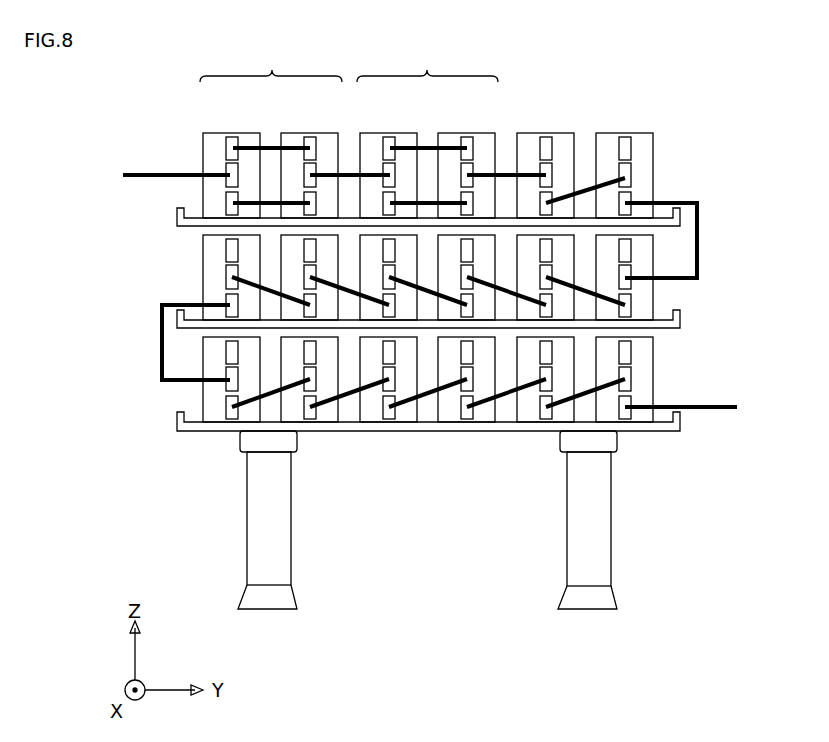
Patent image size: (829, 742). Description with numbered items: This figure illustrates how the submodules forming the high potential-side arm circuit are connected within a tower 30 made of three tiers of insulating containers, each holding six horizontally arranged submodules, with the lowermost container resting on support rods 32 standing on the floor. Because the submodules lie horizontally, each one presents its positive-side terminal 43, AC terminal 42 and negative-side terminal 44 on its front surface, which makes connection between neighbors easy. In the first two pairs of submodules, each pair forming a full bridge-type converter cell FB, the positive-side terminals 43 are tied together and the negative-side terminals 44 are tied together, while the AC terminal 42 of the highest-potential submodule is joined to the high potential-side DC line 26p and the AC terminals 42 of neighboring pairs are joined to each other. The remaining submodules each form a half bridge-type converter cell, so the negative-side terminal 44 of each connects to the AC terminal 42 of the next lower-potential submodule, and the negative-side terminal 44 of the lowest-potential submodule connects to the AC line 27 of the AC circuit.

The tower 30 is at (693, 94).
The high potential-side DC line 26p is at (148, 172).
The AC line 27 is at (722, 412).
The support rod 32 is at (280, 525).
The AC terminal 42 is at (633, 172).
The positive-side terminal 43 is at (632, 150).
The negative-side terminal 44 is at (640, 198).
The functional block FB is at (349, 65).